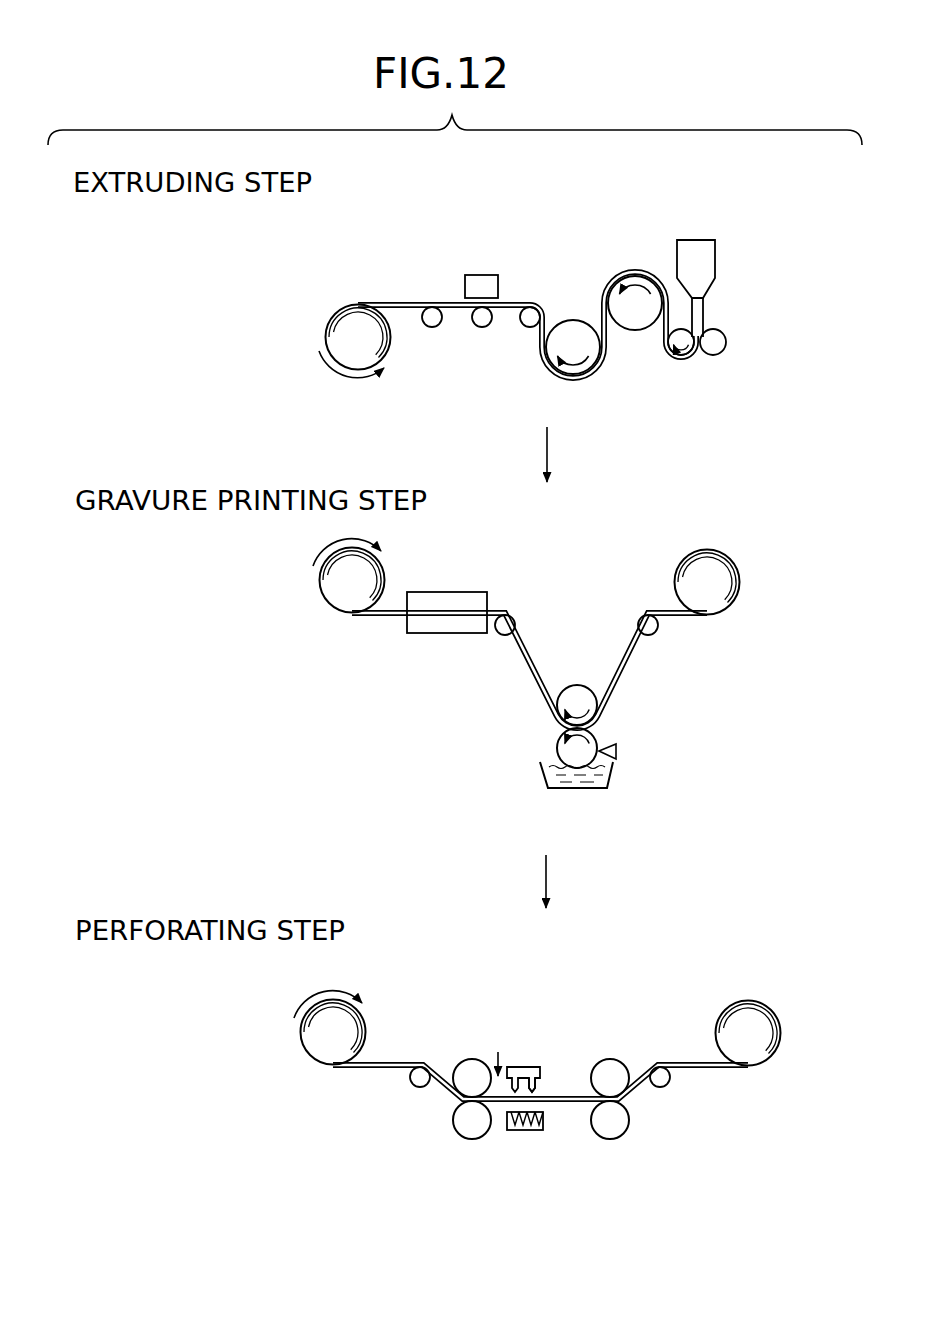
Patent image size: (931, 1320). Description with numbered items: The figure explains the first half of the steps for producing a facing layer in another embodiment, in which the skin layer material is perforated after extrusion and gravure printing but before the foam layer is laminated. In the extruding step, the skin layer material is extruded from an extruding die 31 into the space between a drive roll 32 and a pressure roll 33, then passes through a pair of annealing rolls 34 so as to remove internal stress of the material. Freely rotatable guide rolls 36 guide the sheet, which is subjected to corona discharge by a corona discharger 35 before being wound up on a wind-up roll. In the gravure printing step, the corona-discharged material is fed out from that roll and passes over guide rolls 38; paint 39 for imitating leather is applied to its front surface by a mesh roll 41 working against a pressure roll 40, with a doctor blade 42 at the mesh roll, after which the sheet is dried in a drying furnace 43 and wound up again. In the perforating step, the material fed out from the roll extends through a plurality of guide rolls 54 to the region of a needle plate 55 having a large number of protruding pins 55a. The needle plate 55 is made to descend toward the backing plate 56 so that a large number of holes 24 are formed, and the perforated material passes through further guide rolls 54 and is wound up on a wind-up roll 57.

The holes 24 is at (375, 1068).
The extruding die 31 is at (700, 244).
The drive roll 32 is at (683, 330).
The pressure roll 33 is at (726, 342).
The annealing rolls 34 is at (567, 321).
The corona discharger 35 is at (487, 275).
The guide rolls 36 is at (524, 327).
The guide rolls 38 is at (505, 636).
The paint 39 is at (590, 789).
The pressure roll 40 is at (570, 688).
The mesh roll 41 is at (557, 750).
The doctor blade 42 is at (617, 750).
The drying furnace 43 is at (466, 592).
The guide rolls 54 is at (420, 1088).
The needle plate 55 is at (522, 1067).
The protruding pins 55a is at (538, 1088).
The backing plate 56 is at (522, 1131).
The wind-up roll 57 is at (305, 1050).